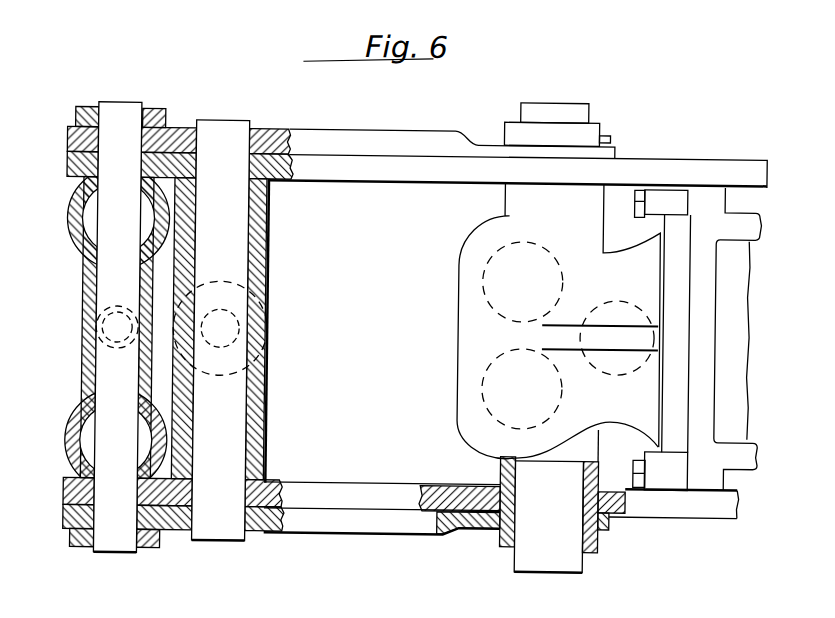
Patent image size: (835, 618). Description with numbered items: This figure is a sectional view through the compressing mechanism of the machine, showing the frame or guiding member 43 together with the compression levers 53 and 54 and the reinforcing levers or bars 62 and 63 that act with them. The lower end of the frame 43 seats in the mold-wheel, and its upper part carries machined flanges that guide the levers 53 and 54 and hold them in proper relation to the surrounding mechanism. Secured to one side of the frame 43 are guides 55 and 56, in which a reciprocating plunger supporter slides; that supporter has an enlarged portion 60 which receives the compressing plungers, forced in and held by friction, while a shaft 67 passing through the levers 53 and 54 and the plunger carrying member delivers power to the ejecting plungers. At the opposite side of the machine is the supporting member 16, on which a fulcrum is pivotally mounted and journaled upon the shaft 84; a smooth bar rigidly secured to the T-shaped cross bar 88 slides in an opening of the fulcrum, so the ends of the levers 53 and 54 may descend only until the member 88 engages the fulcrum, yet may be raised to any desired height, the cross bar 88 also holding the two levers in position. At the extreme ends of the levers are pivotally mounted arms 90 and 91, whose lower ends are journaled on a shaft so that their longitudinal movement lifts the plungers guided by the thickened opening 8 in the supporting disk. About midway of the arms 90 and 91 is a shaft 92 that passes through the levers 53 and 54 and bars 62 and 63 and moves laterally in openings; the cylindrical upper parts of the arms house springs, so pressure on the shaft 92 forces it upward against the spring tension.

The opening 8 is at (604, 140).
The supporting member 16 is at (569, 100).
The frame or guiding member 43 is at (740, 220).
The compression lever 53 is at (408, 166).
The compression lever 54 is at (362, 482).
The guide 55 is at (661, 204).
The guide 56 is at (660, 471).
The enlarged portion 60 is at (459, 345).
The reinforcing lever 62 is at (332, 138).
The reinforcing lever 63 is at (390, 524).
The shaft 67 is at (573, 336).
The shaft 84 is at (220, 126).
The T-shaped cross bar 88 is at (273, 256).
The arm 90 is at (70, 436).
The arm 91 is at (68, 212).
The shaft 92 is at (116, 100).